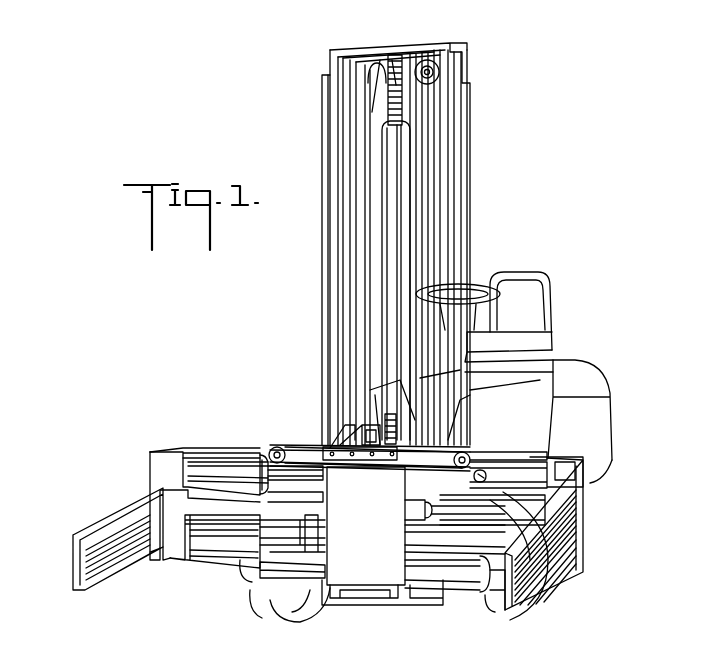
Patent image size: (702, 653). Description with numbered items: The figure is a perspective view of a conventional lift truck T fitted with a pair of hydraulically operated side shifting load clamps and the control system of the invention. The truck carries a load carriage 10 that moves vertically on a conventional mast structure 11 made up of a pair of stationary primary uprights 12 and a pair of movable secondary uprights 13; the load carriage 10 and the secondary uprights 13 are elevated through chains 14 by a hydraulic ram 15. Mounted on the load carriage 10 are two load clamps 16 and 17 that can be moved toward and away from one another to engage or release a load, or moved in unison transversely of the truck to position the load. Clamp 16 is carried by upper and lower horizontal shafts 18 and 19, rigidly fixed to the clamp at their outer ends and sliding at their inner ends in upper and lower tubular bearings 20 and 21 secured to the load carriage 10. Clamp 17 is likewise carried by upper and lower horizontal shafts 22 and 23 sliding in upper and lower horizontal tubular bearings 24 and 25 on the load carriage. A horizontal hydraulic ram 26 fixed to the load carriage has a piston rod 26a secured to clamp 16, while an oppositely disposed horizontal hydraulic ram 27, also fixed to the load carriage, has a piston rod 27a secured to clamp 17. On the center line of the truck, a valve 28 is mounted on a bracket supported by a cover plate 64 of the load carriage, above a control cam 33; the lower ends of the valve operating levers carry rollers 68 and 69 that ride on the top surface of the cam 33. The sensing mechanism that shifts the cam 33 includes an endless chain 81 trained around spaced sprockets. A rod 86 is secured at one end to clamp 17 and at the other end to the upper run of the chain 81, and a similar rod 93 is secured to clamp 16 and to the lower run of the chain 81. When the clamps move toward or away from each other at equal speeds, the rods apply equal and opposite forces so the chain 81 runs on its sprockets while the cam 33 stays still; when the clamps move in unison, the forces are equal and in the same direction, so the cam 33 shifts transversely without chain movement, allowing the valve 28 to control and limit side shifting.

The lift truck T is at (594, 352).
The load carriage 10 is at (378, 540).
The mast structure 11 is at (485, 216).
The primary uprights 12 is at (326, 136).
The secondary uprights 13 is at (338, 90).
The chains 14 is at (400, 66).
The hydraulic ram 15 is at (398, 150).
The load clamp 16 is at (72, 561).
The load clamp 17 is at (522, 586).
The upper horizontal shaft 18 is at (218, 480).
The lower horizontal shaft 19 is at (200, 556).
The upper tubular bearing 20 is at (265, 478).
The lower tubular bearing 21 is at (265, 580).
The upper horizontal shaft 22 is at (505, 468).
The lower horizontal shaft 23 is at (485, 582).
The upper horizontal tubular bearing 24 is at (472, 462).
The lower horizontal tubular bearing 25 is at (440, 548).
The hydraulic ram 26 is at (313, 530).
The piston rod 26a is at (237, 520).
The hydraulic ram 27 is at (414, 510).
The piston rod 27a is at (462, 520).
The valve 28 is at (368, 445).
The control cam 33 is at (398, 445).
The cover plate 64 is at (362, 578).
The roller 68 is at (353, 437).
The roller 69 is at (394, 437).
The endless chain 81 is at (288, 440).
The rod 86 is at (537, 456).
The rod 93 is at (200, 454).